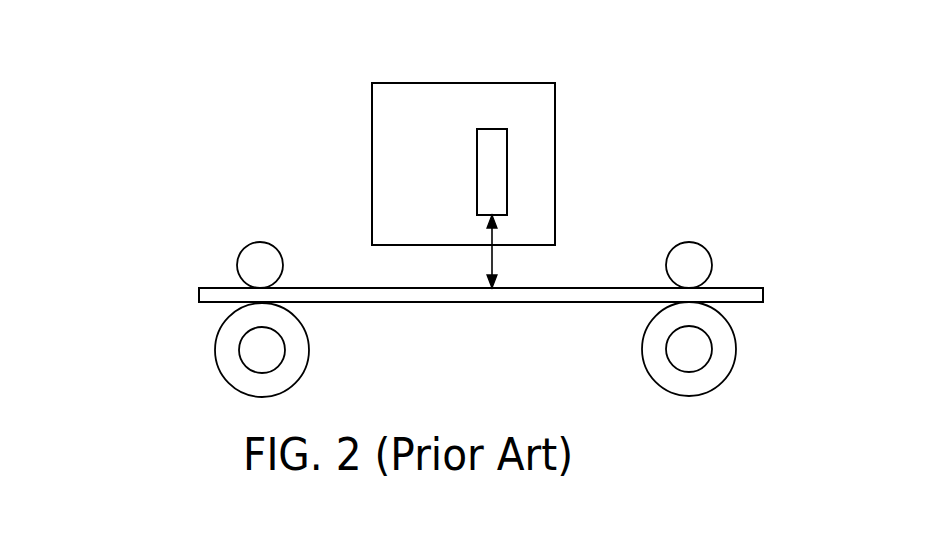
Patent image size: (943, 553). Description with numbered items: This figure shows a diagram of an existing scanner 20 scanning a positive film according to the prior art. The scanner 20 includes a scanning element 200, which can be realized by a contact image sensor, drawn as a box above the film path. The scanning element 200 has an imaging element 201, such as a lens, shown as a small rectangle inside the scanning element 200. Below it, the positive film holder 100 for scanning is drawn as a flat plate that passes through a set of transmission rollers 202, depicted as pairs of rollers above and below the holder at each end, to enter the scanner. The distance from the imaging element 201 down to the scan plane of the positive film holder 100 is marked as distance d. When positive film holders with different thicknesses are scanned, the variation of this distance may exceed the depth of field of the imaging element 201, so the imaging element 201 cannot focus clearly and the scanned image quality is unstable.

The scanner 20 is at (68, 44).
The positive film holder 100 is at (210, 295).
The scanning element 200 is at (371, 97).
The imaging element 201 is at (492, 199).
The transmission rollers 202 is at (215, 357).